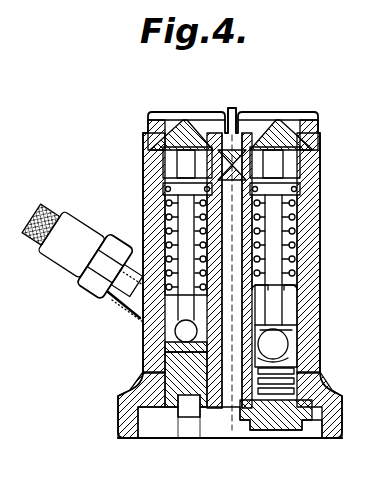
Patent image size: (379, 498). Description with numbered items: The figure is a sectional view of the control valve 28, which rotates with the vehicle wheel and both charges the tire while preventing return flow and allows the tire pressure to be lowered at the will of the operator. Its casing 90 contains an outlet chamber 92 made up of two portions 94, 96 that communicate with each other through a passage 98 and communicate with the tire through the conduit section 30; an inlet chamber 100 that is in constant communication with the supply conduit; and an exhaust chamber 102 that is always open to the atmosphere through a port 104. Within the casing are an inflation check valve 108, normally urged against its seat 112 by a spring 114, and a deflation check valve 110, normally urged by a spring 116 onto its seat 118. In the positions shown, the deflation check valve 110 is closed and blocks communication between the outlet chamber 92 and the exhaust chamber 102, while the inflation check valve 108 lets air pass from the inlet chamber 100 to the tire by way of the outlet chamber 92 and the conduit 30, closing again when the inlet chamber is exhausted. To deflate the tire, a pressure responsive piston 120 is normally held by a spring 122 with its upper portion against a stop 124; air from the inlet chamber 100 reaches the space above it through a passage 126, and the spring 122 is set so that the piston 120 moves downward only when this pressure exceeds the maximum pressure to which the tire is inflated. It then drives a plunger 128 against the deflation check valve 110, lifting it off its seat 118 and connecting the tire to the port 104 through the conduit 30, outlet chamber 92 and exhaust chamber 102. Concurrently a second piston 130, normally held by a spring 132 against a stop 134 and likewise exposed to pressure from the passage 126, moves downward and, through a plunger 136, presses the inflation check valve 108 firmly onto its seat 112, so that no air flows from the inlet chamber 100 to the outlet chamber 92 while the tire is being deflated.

The control valve 28 is at (142, 132).
The conduit section 30 is at (50, 206).
The casing 90 is at (165, 170).
The outlet chamber 92 is at (290, 356).
The portion of outlet chamber 94 is at (288, 336).
The portion of outlet chamber 96 is at (165, 340).
The passage 98 is at (205, 427).
The inlet chamber 100 is at (186, 436).
The exhaust chamber 102 is at (300, 292).
The port 104 is at (300, 300).
The inflation check valve 108 is at (165, 347).
The deflation check valve 110 is at (296, 370).
The seat 112 is at (165, 370).
The spring 114 is at (140, 320).
The spring 116 is at (312, 388).
The seat 118 is at (292, 326).
The pressure responsive piston 120 is at (310, 192).
The spring 122 is at (298, 244).
The stop 124 is at (300, 170).
The passage 126 is at (233, 125).
The plunger 128 is at (300, 220).
The piston 130 is at (163, 186).
The spring 132 is at (163, 204).
The stop 134 is at (170, 160).
The plunger 136 is at (180, 268).